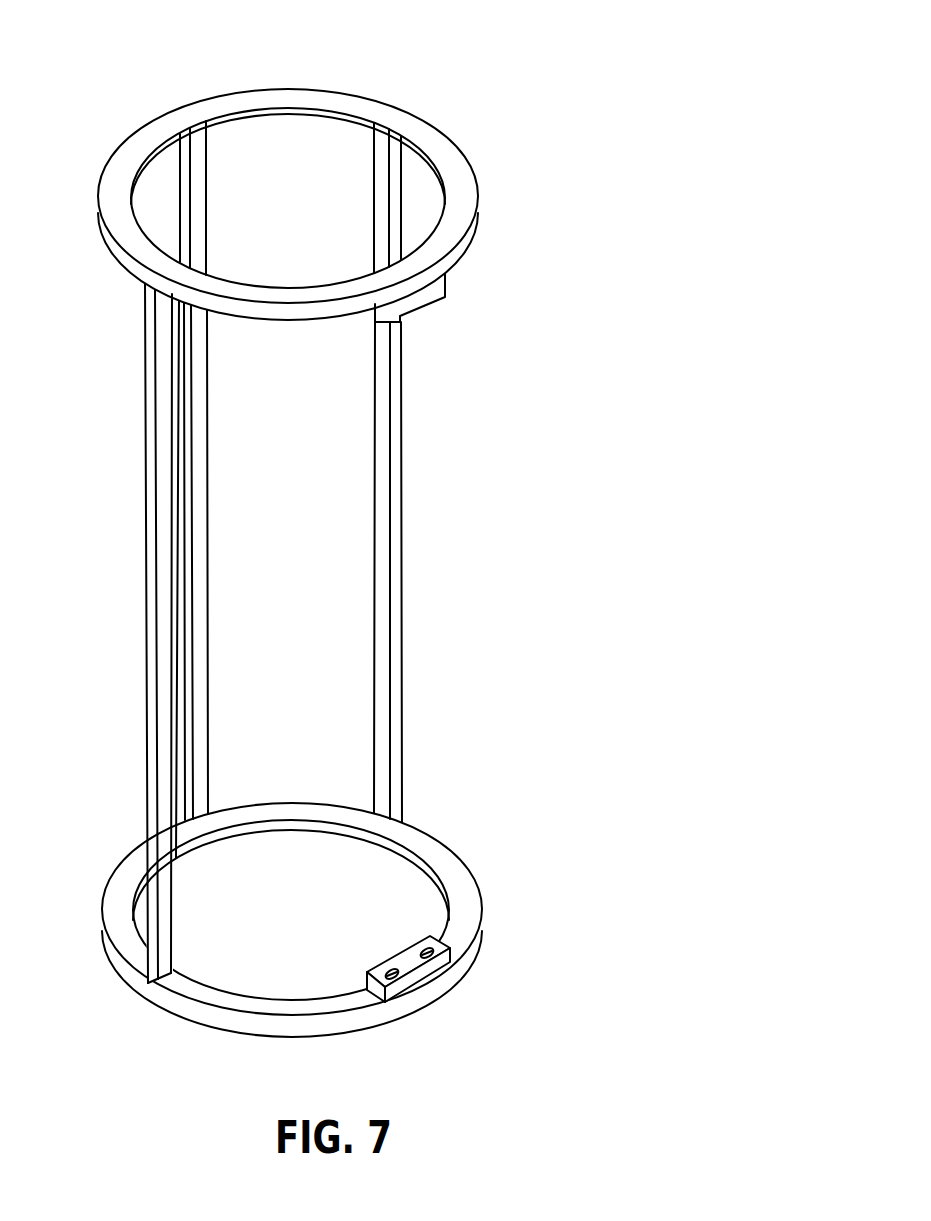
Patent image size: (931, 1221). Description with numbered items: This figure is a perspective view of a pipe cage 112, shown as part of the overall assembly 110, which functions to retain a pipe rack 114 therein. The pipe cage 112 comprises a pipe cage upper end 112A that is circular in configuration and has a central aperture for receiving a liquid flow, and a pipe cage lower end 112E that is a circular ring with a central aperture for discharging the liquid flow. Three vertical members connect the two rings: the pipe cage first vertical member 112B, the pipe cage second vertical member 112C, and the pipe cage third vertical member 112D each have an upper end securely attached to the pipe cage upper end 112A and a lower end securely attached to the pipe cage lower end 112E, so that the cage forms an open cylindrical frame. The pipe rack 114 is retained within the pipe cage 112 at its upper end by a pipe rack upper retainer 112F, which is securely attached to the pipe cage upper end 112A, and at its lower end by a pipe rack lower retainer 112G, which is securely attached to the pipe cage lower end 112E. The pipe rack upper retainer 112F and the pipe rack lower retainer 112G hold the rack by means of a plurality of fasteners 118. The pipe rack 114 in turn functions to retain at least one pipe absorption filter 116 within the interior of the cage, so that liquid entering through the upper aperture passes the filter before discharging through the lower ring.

The filter assembly 110 is at (248, 28).
The pipe cage 112 is at (416, 106).
The pipe cage upper end 112A is at (463, 201).
The pipe cage first vertical member 112B is at (390, 587).
The pipe cage second vertical member 112C is at (195, 678).
The pipe cage third vertical member 112D is at (160, 459).
The pipe cage lower end 112E is at (172, 1007).
The pipe rack upper retainer 112F is at (438, 292).
The pipe rack lower retainer 112G is at (423, 973).
The pipe rack 114 is at (413, 183).
The pipe absorption filter 116 is at (300, 425).
The fasteners 118 is at (432, 307).